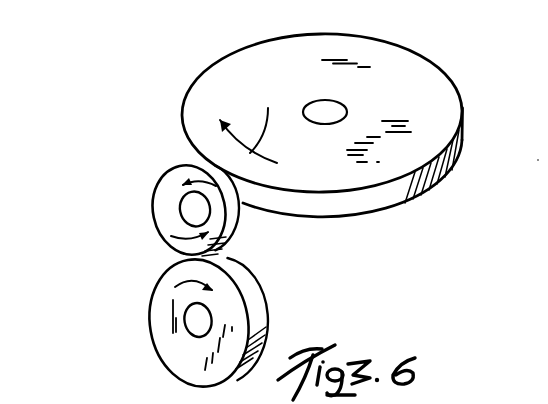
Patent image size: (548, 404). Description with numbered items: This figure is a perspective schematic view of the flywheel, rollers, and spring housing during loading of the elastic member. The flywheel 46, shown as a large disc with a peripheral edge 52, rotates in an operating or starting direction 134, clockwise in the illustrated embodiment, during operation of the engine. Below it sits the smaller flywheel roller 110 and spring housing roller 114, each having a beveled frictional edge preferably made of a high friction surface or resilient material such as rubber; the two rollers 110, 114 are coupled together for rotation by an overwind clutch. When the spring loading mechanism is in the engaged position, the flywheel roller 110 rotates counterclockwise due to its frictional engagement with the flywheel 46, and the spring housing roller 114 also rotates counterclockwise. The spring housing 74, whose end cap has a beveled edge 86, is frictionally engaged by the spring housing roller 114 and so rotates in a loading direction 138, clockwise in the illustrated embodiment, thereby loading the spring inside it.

The flywheel 46 is at (322, 123).
The peripheral edge of disc 52 is at (403, 184).
The operating or starting direction 134 is at (255, 122).
The flywheel roller 110 is at (136, 209).
The spring housing roller 114 is at (163, 192).
The spring housing 74 is at (191, 322).
The beveled edge 86 is at (247, 283).
The loading direction 138 is at (165, 278).